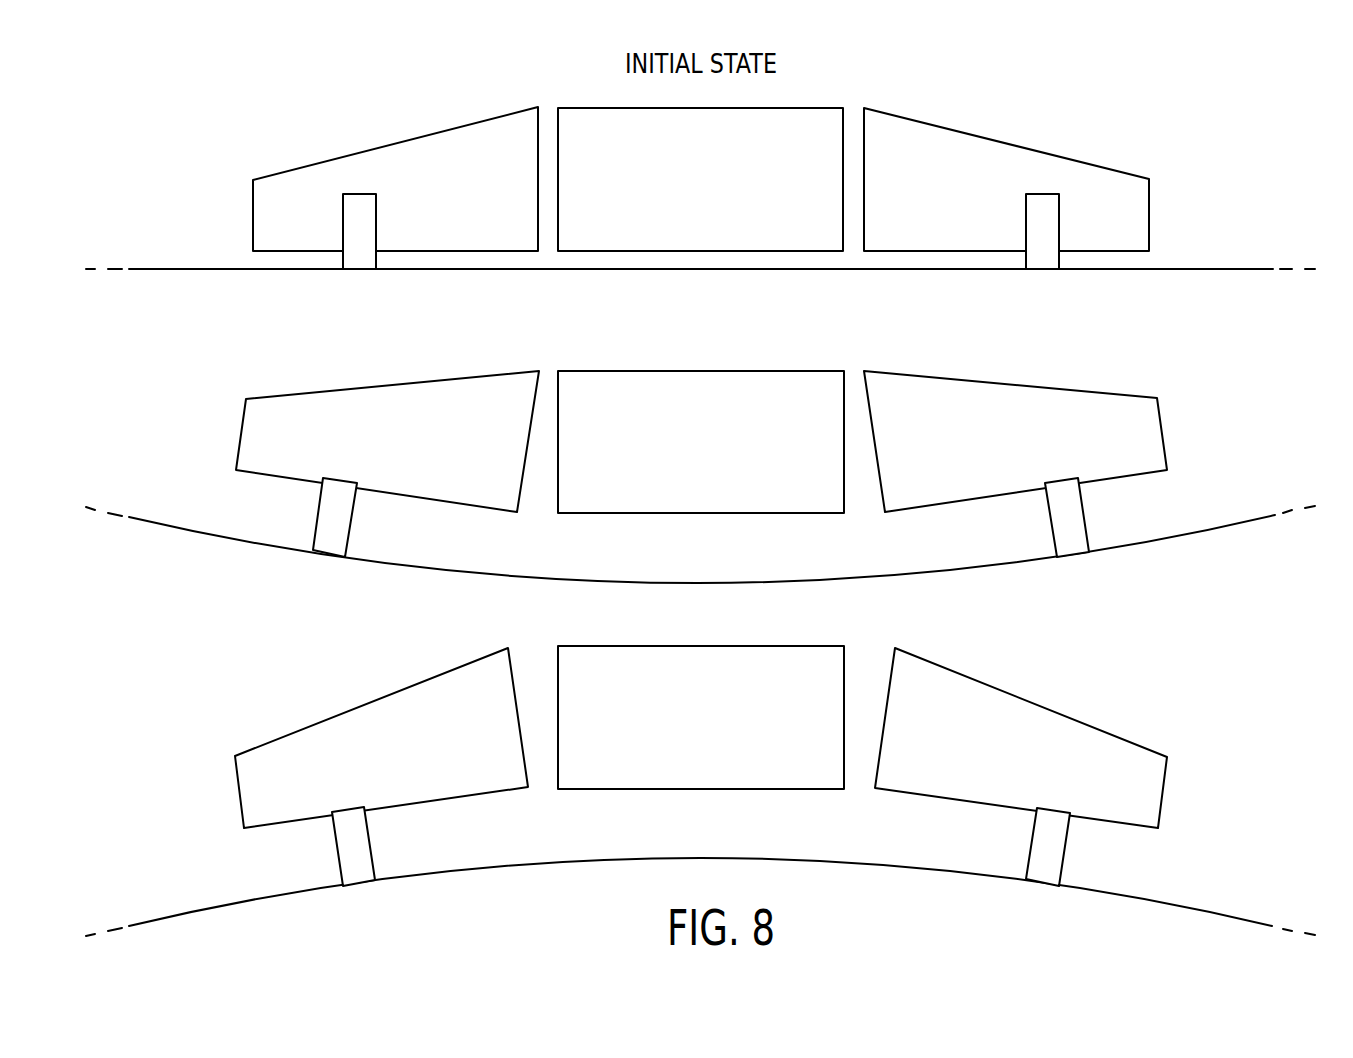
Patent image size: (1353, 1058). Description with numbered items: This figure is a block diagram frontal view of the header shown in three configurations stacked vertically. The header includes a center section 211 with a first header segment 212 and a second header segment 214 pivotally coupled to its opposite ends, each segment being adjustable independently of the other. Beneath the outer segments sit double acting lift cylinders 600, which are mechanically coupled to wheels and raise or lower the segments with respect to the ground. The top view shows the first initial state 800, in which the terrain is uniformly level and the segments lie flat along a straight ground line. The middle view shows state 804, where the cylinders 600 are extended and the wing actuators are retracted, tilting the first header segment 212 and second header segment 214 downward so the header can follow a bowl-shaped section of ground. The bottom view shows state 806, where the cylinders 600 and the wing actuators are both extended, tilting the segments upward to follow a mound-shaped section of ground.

The center section 211 is at (595, 107).
The first header segment 212 is at (397, 140).
The second header segment 214 is at (1005, 140).
The second double acting lift cylinder 600 is at (373, 280).
The first initial state 800 is at (1140, 112).
The state 804 is at (1157, 330).
The state 806 is at (1165, 670).